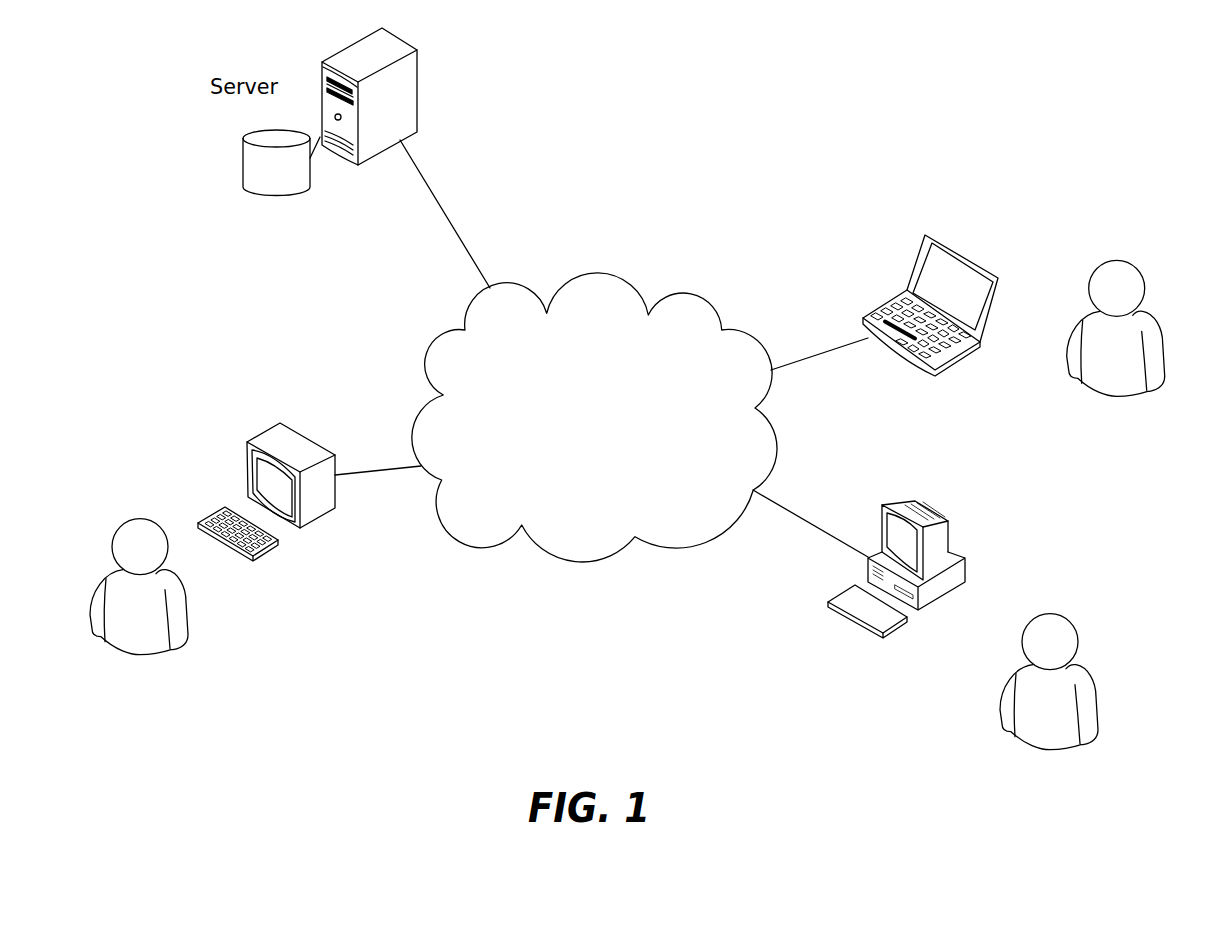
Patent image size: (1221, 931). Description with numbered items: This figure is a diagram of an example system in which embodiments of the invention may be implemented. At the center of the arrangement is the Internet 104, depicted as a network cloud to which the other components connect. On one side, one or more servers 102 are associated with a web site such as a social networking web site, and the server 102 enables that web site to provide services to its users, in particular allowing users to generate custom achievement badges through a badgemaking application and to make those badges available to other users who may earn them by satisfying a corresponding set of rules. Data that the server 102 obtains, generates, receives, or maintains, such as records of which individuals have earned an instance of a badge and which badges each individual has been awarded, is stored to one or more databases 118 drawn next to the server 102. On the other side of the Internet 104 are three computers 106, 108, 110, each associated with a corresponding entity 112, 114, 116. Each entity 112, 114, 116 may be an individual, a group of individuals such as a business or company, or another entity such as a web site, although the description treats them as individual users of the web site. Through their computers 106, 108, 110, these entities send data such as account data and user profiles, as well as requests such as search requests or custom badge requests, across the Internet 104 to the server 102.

The server 102 is at (417, 95).
The database 118 is at (281, 162).
The Internet 104 is at (614, 440).
The computer 106 is at (300, 432).
The computer 108 is at (957, 250).
The computer 110 is at (948, 517).
The entity 112 is at (152, 519).
The entity 114 is at (1143, 283).
The entity 116 is at (1073, 630).